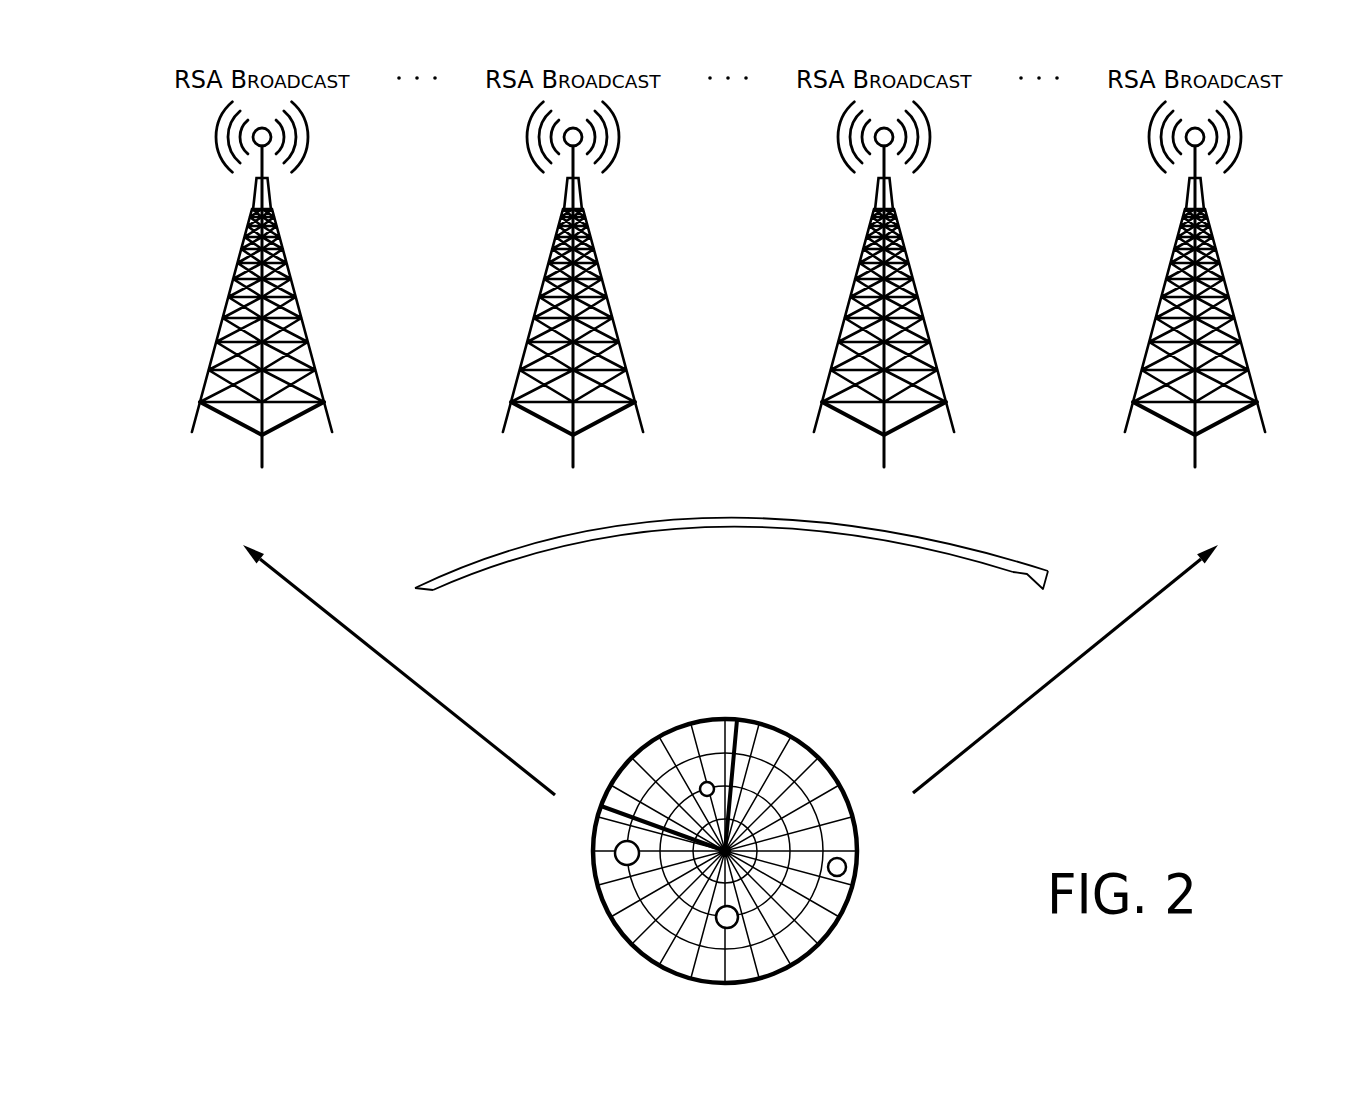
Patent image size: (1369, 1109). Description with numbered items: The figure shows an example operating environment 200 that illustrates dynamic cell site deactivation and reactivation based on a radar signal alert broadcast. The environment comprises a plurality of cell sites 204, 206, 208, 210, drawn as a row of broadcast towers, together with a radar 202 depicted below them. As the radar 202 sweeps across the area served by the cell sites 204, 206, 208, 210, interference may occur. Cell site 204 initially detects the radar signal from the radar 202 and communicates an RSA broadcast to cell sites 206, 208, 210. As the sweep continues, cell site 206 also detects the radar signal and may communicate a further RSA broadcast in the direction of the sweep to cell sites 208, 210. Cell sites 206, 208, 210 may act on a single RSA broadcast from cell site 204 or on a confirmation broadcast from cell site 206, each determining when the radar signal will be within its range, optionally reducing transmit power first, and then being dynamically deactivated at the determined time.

The operating environment 200 is at (170, 777).
The radar 202 is at (562, 848).
The cell site 204 is at (205, 312).
The cell site 206 is at (516, 312).
The cell site 208 is at (827, 312).
The cell site 210 is at (1138, 312).